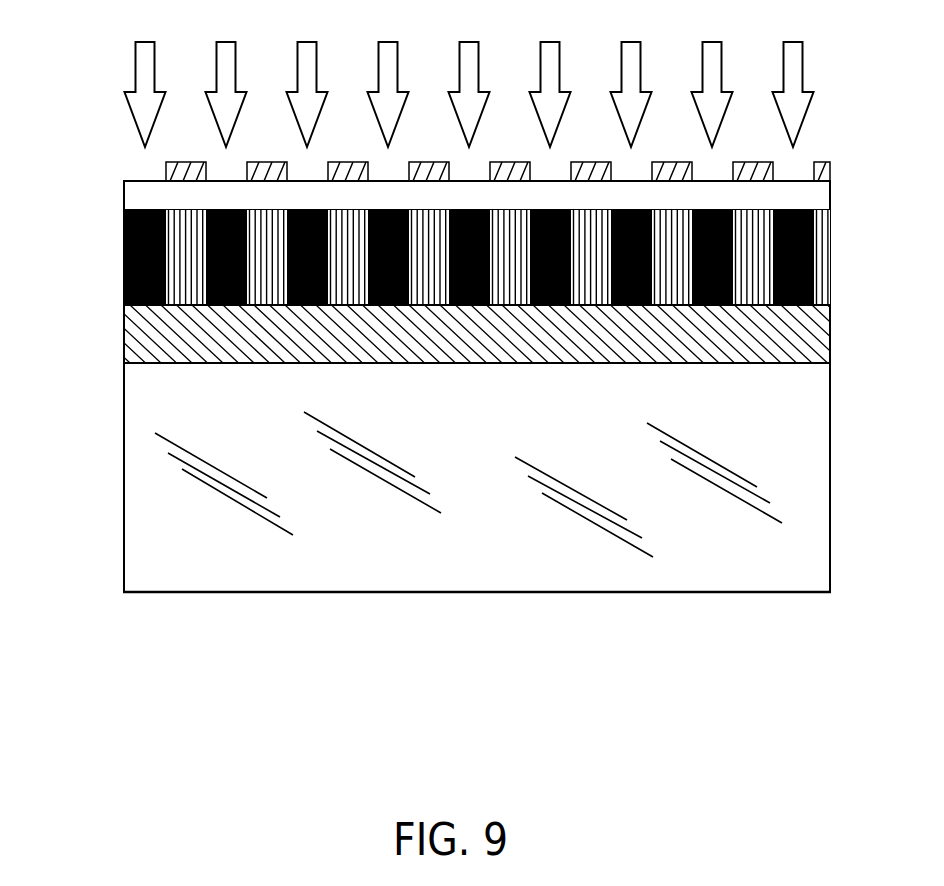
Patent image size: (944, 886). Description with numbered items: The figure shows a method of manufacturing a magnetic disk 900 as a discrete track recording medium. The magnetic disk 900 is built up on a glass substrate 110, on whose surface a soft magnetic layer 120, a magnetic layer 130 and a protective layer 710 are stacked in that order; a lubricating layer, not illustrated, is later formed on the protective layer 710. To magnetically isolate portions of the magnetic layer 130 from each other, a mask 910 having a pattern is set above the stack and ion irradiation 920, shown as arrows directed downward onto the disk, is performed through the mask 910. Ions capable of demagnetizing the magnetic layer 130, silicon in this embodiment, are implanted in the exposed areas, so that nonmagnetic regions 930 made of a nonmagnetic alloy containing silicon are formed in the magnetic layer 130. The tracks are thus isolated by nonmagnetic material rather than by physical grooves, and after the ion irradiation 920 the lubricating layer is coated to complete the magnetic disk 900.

The magnetic disk 900 is at (448, 418).
The ion irradiation 920 is at (143, 83).
The mask 910 is at (170, 169).
The protective layer 710 is at (130, 193).
The nonmagnetic regions 930 is at (125, 263).
The magnetic layer 130 is at (183, 297).
The soft magnetic layer 120 is at (130, 347).
The glass substrate 110 is at (673, 573).